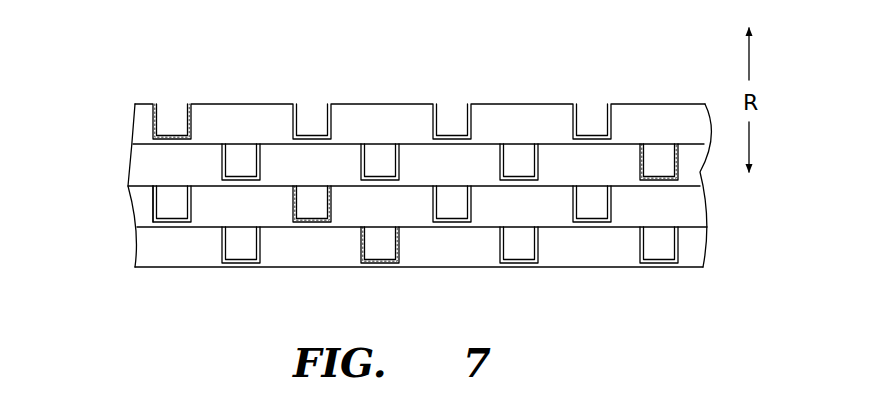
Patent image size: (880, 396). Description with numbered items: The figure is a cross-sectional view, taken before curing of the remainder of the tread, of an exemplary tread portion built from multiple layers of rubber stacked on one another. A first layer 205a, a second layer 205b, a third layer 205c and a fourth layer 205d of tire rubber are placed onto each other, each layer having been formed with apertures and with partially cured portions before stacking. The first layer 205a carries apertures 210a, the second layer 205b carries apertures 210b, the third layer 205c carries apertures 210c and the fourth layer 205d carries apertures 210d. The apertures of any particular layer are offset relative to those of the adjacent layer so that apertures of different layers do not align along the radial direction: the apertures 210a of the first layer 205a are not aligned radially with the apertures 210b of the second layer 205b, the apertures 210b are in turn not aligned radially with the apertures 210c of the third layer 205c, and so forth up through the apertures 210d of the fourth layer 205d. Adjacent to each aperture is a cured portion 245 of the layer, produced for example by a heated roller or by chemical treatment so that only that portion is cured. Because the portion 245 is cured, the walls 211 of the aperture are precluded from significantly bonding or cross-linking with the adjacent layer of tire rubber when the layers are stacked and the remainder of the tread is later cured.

The first layer 205a is at (152, 248).
The second layer 205b is at (675, 207).
The third layer 205c is at (152, 165).
The fourth layer 205d is at (245, 120).
The apertures of first layer 210a is at (668, 243).
The apertures of second layer 210b is at (175, 210).
The apertures of third layer 210c is at (519, 156).
The apertures of fourth layer 210d is at (173, 108).
The walls of aperture 211 is at (150, 202).
The cured portion 245 is at (157, 108).